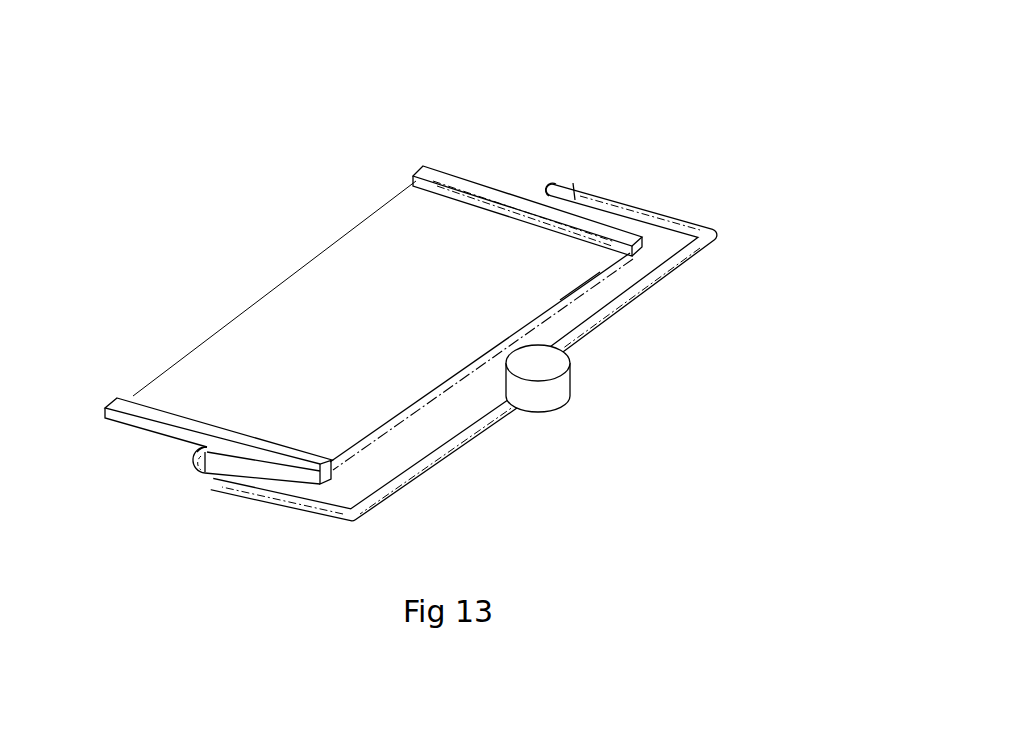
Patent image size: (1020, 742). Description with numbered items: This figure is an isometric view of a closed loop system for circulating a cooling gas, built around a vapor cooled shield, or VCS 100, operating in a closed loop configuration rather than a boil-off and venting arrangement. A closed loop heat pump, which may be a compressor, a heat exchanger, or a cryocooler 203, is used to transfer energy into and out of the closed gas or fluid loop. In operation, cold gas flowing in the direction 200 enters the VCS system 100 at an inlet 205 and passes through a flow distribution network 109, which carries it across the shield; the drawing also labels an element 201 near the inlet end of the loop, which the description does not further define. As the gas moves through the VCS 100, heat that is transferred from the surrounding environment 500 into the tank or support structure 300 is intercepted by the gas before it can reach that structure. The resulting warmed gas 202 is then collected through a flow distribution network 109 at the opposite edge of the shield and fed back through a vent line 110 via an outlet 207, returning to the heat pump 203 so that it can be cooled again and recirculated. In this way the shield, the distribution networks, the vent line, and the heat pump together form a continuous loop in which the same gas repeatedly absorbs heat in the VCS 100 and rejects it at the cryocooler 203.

The surrounding environment 500 is at (186, 146).
The VCS 100 is at (272, 273).
The flow distribution network 109 is at (447, 179).
The vent line 110 is at (622, 205).
The direction 200 is at (444, 493).
The tube end block 201 is at (167, 458).
The warmed gas 202 is at (528, 188).
The cryocooler 203 is at (550, 390).
The inlet 205 is at (213, 445).
The outlet 207 is at (541, 196).
The tank or support structure 300 is at (573, 290).